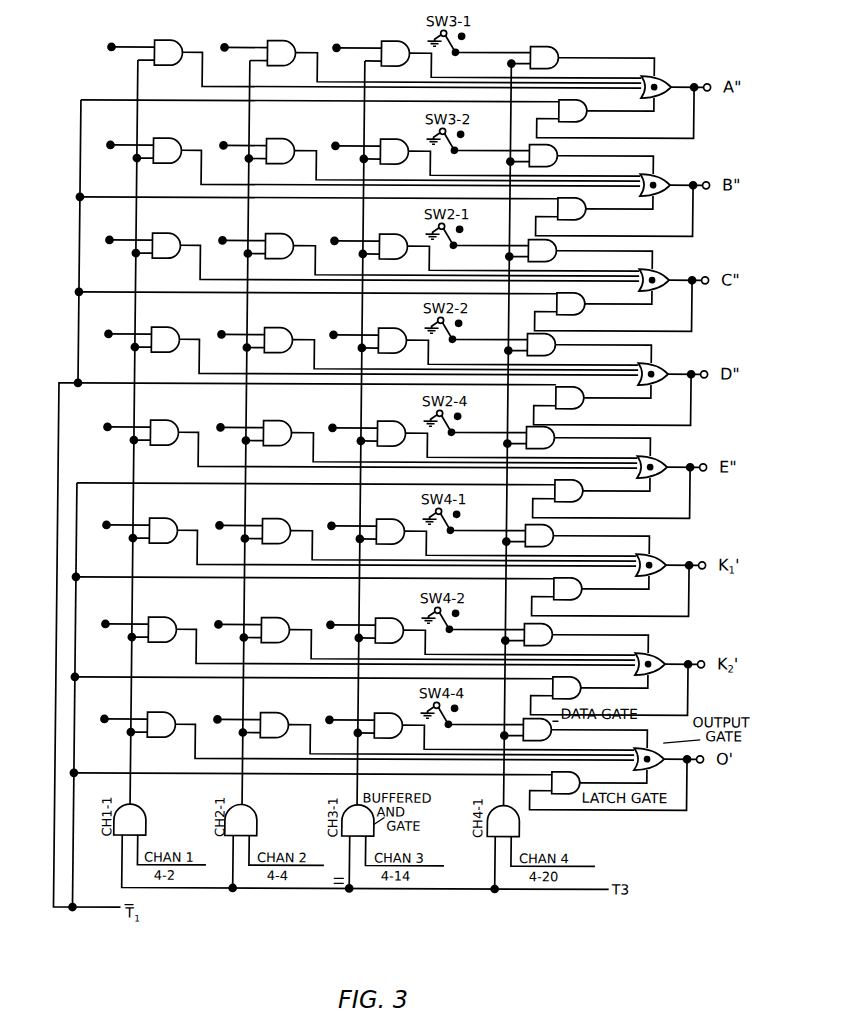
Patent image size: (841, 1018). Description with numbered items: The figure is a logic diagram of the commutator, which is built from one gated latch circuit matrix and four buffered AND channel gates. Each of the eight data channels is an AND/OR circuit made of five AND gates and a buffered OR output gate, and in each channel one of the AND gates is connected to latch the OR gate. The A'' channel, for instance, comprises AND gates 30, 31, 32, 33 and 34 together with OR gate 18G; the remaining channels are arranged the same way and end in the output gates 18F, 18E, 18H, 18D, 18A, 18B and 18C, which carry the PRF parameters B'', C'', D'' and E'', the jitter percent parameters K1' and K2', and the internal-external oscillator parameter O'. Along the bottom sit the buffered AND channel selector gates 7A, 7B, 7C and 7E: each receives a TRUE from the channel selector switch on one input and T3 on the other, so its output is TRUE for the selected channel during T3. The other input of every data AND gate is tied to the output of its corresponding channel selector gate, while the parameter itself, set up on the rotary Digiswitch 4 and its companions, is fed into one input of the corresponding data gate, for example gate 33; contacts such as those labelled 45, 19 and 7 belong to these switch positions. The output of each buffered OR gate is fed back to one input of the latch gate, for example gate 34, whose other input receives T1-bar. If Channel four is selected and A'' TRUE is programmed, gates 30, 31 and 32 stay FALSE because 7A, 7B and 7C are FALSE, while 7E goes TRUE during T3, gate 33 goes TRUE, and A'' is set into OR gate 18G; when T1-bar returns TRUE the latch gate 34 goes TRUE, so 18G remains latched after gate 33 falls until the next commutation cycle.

The AND gate 30 is at (375, 50).
The AND gate 31 is at (431, 47).
The AND gate 32 is at (487, 45).
The data AND gate 33 is at (581, 47).
The latch gate 34 is at (606, 118).
The buffered OR output gate 18A is at (661, 556).
The buffered OR output gate 18B is at (659, 655).
The buffered OR output gate 18C is at (659, 747).
The buffered OR output gate 18D is at (662, 458).
The buffered OR output gate 18E is at (663, 271).
The buffered OR output gate 18F is at (663, 176).
The buffered OR output gate 18G is at (666, 78).
The buffered OR output gate 18H is at (663, 365).
The buffered AND channel selector gate 7A is at (361, 846).
The buffered AND channel selector gate 7B is at (274, 847).
The buffered AND channel selector gate 7C is at (392, 848).
The buffered AND channel selector gate 7E is at (541, 848).
The switch contact 45 is at (475, 329).
The switch contact 19 is at (474, 422).
The switch 4 is at (473, 520).
The switch contact 7 is at (472, 619).